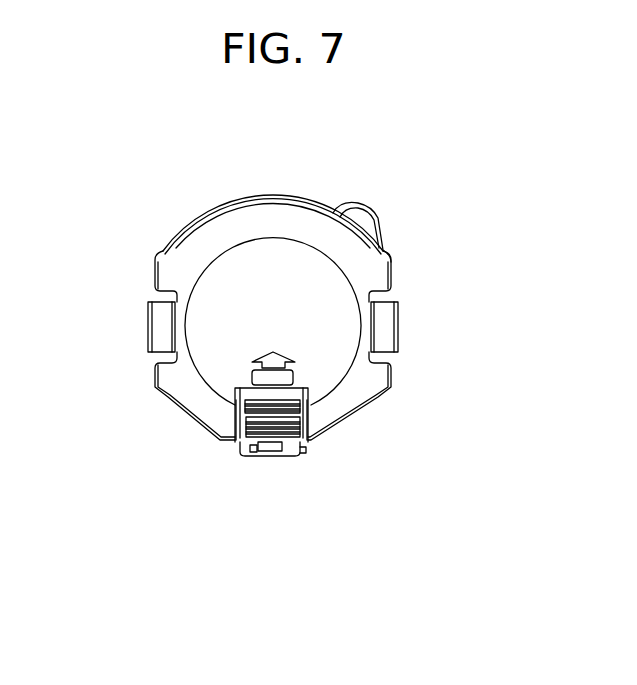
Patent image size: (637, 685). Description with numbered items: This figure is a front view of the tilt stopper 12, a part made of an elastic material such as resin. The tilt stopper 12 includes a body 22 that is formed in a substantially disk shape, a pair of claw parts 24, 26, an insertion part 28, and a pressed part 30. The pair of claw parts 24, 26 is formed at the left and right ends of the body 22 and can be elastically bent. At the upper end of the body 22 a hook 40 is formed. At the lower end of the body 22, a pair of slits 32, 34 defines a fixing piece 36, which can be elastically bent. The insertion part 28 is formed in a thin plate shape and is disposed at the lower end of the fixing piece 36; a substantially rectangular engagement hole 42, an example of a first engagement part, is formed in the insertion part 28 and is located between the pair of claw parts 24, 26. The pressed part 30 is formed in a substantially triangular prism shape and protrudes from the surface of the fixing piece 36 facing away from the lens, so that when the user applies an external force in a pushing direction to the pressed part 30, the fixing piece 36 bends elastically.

The tilt stopper 12 is at (330, 189).
The body 22 is at (255, 222).
The claw part 24 is at (148, 330).
The claw part 26 is at (400, 323).
The insertion part 28 is at (300, 452).
The pressed part 30 is at (236, 418).
The slit 32 is at (236, 426).
The slit 34 is at (306, 426).
The fixing piece 36 is at (238, 443).
The hook 40 is at (378, 222).
The engagement hole 42 is at (265, 443).